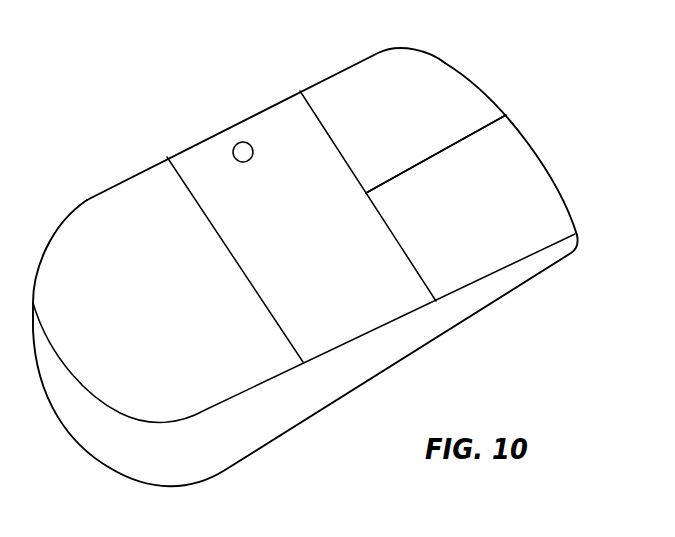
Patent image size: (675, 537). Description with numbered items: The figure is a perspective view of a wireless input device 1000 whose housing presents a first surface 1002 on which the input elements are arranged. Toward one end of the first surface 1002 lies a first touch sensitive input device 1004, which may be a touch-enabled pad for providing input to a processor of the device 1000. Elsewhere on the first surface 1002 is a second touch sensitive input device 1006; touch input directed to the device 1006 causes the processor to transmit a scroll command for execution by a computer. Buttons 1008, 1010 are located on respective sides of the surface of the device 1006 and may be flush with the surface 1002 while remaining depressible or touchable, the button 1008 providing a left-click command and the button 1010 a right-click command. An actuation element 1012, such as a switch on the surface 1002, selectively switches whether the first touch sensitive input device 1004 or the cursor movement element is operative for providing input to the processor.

The wireless input device 1000 is at (246, 50).
The first surface 1002 is at (217, 160).
The first touch sensitive input device 1004 is at (133, 210).
The second touch sensitive input device 1006 is at (475, 133).
The button 1008 is at (438, 85).
The button 1010 is at (525, 180).
The actuation element 1012 is at (240, 142).